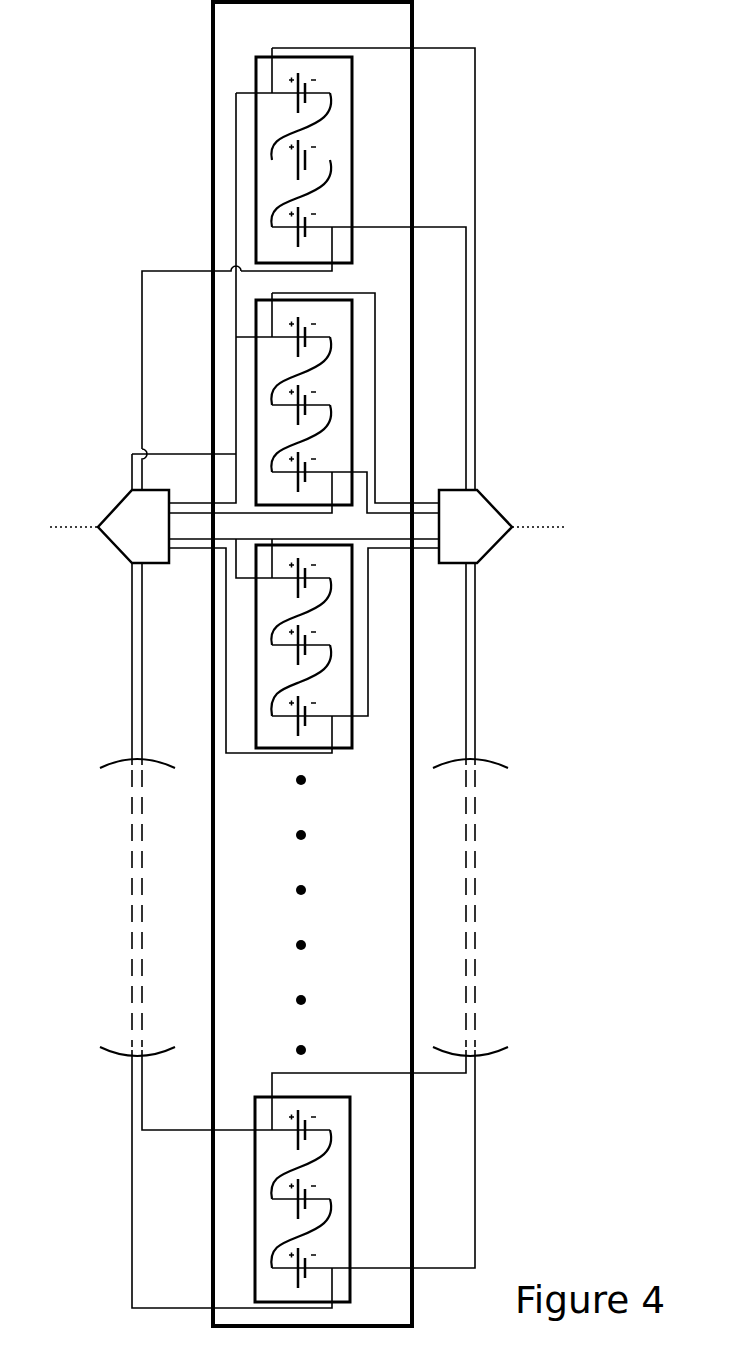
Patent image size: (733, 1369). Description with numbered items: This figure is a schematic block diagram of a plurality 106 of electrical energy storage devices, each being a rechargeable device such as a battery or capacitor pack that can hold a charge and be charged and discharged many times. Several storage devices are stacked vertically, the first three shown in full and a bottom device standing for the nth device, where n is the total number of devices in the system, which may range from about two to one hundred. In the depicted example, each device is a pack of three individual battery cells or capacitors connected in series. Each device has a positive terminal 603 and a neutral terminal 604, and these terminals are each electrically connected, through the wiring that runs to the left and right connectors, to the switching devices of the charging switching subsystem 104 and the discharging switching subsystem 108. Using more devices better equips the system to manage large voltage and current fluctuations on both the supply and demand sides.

The plurality of electrical energy storage devices 106 is at (403, 31).
The charging switching subsystem 104 is at (109, 526).
The discharging switching subsystem 108 is at (502, 526).
The positive terminal 603 is at (282, 98).
The neutral terminal 604 is at (320, 233).